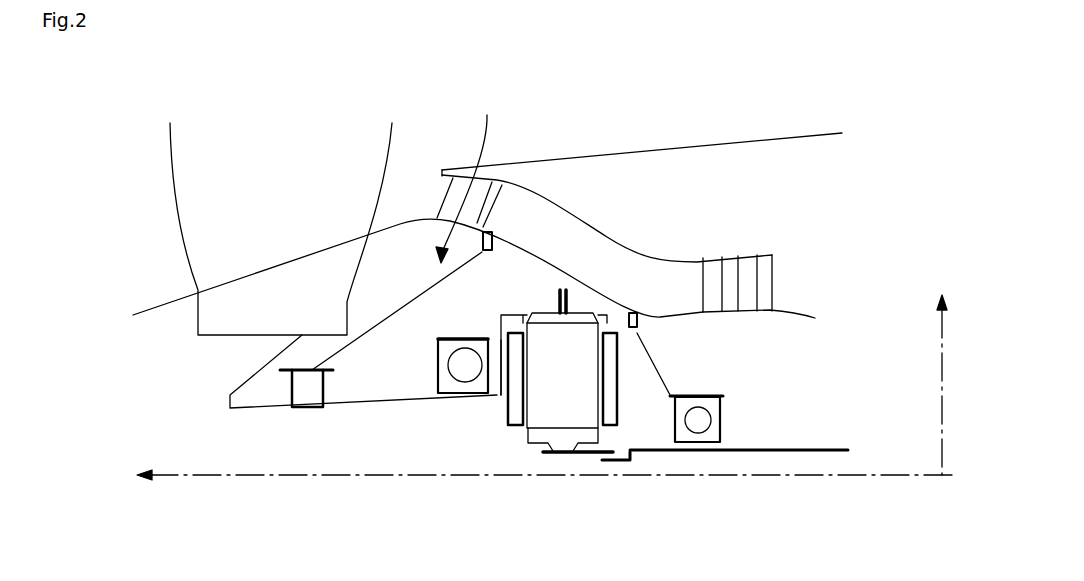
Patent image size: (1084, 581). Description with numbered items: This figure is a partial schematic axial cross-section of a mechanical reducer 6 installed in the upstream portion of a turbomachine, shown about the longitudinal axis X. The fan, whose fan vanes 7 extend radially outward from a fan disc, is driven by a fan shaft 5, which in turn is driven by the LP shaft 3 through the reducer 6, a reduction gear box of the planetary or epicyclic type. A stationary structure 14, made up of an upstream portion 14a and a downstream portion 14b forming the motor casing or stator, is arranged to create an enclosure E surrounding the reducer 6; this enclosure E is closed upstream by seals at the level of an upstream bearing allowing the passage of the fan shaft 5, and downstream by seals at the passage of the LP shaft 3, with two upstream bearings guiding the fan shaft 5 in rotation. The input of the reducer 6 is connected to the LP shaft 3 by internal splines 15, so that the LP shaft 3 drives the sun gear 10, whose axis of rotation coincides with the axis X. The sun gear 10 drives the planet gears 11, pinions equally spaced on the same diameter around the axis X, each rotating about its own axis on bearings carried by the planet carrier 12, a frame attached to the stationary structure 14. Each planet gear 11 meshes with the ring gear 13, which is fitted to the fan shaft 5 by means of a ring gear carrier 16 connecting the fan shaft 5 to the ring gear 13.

The LP shaft 3 is at (748, 452).
The fan shaft 5 is at (260, 412).
The mechanical reducer 6 is at (578, 458).
The fan vanes 7 is at (195, 172).
The sun gear 10 is at (537, 447).
The planet gears 11 is at (540, 410).
The planet carrier 12 is at (513, 377).
The ring gear 13 is at (540, 318).
The stationary structure 14 is at (468, 173).
The upstream portion 14a is at (395, 312).
The downstream portion 14b is at (657, 366).
The internal splines 15 is at (566, 455).
The ring gear carrier 16 is at (505, 316).
The enclosure E is at (383, 388).
The longitudinal axis X is at (213, 477).